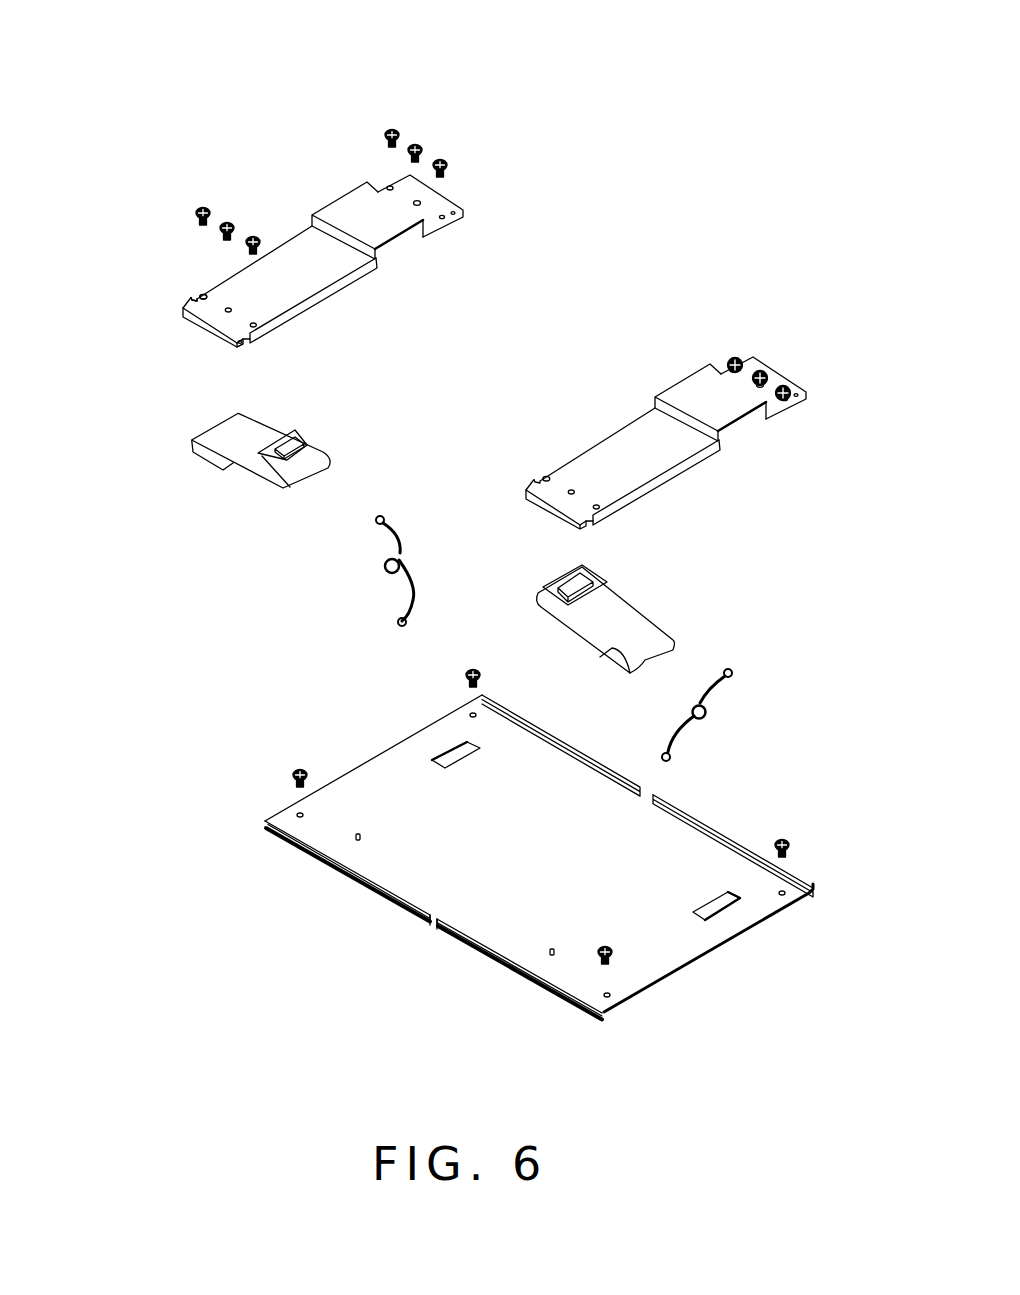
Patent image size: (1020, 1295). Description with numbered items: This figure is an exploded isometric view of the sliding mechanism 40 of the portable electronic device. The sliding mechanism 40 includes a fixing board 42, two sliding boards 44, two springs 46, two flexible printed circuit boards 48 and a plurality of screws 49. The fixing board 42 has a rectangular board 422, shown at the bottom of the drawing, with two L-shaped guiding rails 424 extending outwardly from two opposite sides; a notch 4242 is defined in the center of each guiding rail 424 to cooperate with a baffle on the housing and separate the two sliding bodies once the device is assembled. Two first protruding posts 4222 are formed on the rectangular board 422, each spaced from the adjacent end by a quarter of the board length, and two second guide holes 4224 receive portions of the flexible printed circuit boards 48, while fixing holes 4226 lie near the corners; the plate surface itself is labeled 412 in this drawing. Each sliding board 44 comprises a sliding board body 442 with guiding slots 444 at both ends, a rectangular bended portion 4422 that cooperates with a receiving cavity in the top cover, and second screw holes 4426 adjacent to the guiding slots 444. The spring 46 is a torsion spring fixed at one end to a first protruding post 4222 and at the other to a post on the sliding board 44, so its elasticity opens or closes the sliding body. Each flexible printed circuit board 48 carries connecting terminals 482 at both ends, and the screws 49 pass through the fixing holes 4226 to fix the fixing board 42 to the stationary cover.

The sliding mechanism 40 is at (537, 45).
The fixing board 42 is at (265, 839).
The bottom plate 412 is at (673, 958).
The rectangular board 422 is at (463, 803).
The first protruding post 4222 is at (356, 841).
The second guide hole 4224 is at (720, 907).
The fixing hole 4226 is at (295, 812).
The guiding rail 424 is at (675, 810).
The notch 4242 is at (430, 922).
The sliding board 44 is at (333, 189).
The sliding board body 442 is at (275, 293).
The bended portion 4422 is at (397, 244).
The second screw hole 4426 is at (202, 296).
The guiding slot 444 is at (250, 345).
The spring 46 is at (397, 537).
The flexible printed circuit board 48 is at (222, 437).
The connecting terminal 482 is at (293, 445).
The screw 49 is at (419, 145).